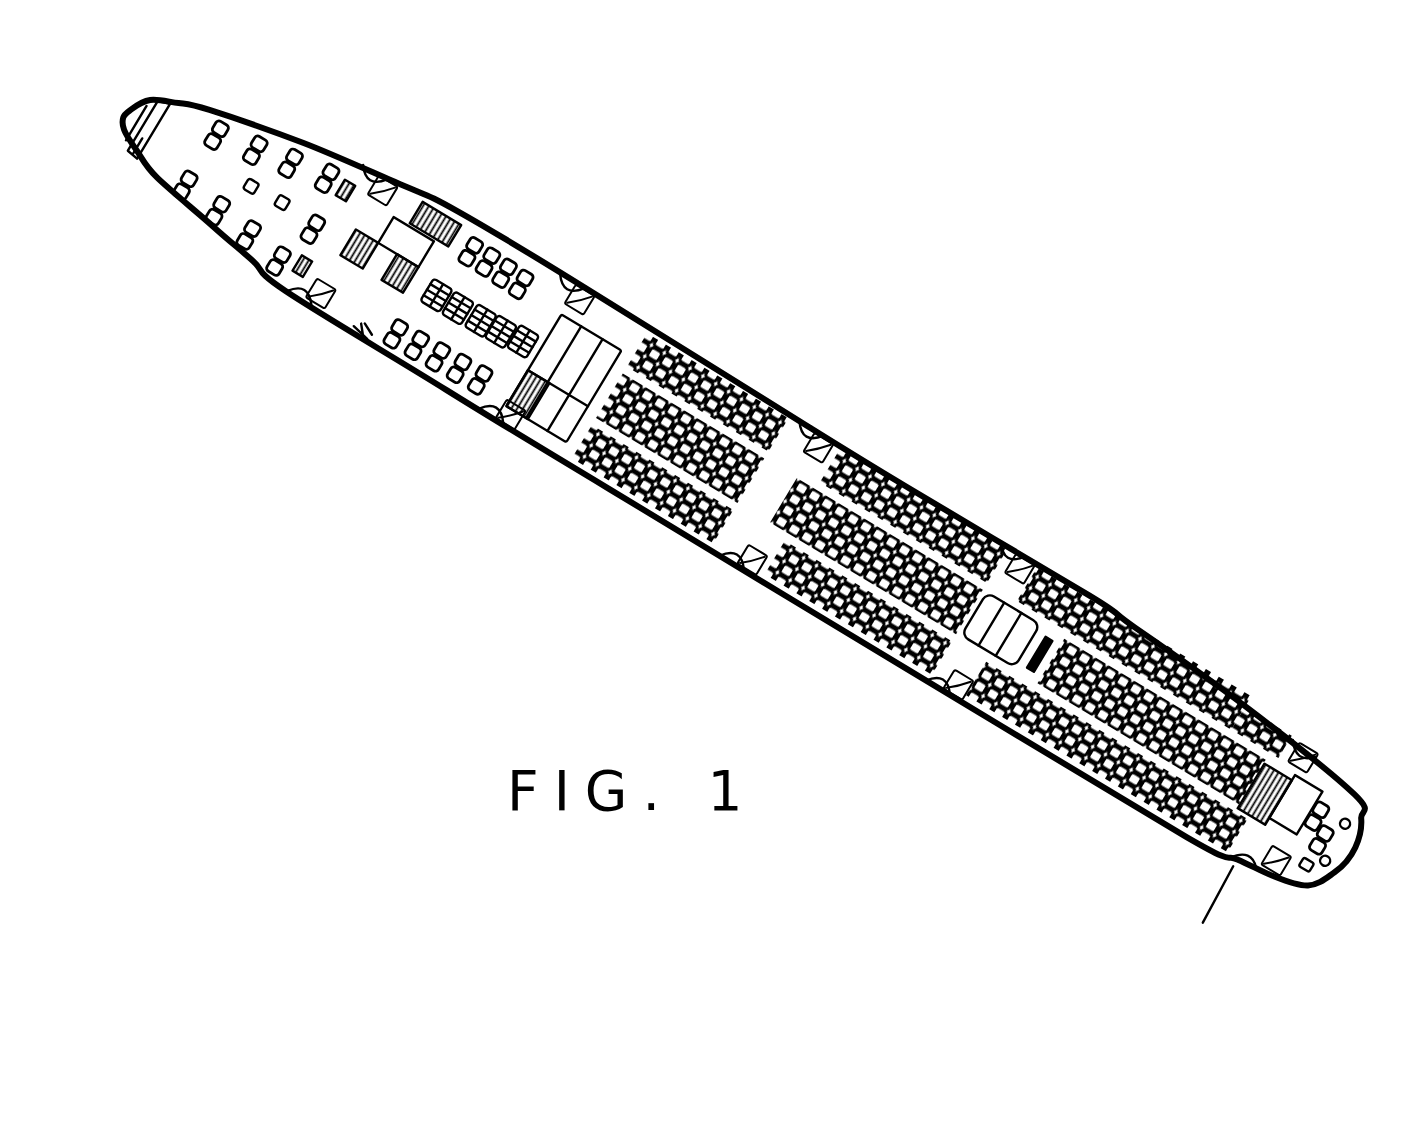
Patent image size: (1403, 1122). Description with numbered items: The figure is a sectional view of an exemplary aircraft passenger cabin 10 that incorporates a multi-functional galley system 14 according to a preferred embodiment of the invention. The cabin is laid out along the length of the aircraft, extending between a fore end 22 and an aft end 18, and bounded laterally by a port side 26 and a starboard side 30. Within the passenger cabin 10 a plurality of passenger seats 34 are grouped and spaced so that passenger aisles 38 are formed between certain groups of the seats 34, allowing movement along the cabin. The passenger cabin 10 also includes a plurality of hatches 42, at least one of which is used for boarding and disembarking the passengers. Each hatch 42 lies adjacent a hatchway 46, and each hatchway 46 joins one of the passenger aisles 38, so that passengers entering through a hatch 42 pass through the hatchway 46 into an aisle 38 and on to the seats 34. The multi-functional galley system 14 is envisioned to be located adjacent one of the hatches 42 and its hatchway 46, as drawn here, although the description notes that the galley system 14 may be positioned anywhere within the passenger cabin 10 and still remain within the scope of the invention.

The aircraft passenger cabin 10 is at (565, 212).
The multi-functional galley system 14 is at (1098, 612).
The aft end 18 is at (1362, 836).
The fore end 22 is at (113, 123).
The port side 26 is at (603, 484).
The starboard side 30 is at (695, 345).
The passenger seats 34 is at (657, 520).
The passenger aisles 38 is at (745, 382).
The hatches 42 is at (364, 168).
The hatchway 46 is at (385, 185).